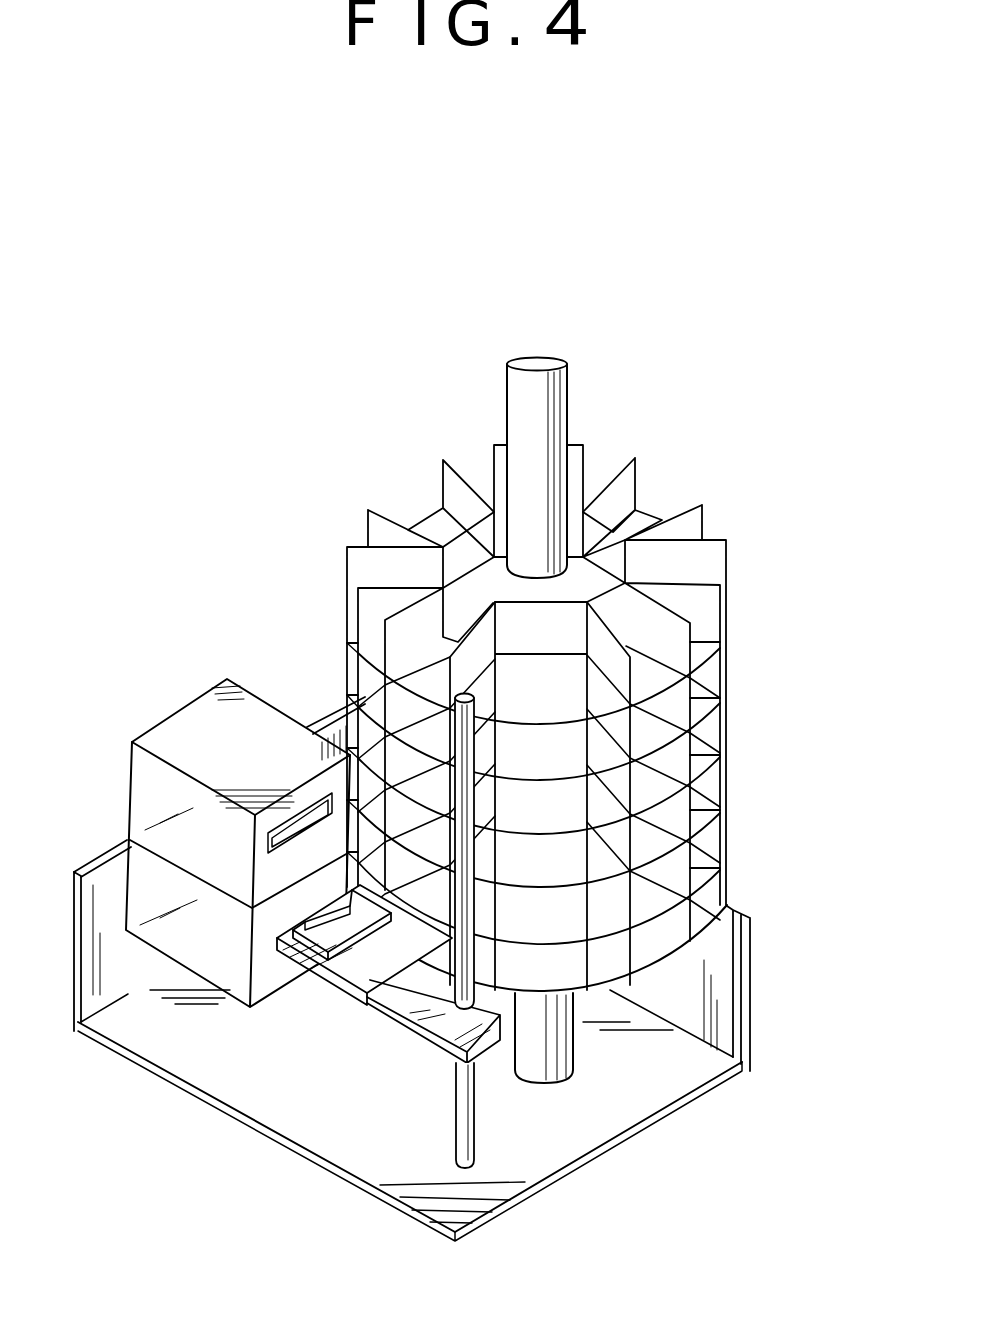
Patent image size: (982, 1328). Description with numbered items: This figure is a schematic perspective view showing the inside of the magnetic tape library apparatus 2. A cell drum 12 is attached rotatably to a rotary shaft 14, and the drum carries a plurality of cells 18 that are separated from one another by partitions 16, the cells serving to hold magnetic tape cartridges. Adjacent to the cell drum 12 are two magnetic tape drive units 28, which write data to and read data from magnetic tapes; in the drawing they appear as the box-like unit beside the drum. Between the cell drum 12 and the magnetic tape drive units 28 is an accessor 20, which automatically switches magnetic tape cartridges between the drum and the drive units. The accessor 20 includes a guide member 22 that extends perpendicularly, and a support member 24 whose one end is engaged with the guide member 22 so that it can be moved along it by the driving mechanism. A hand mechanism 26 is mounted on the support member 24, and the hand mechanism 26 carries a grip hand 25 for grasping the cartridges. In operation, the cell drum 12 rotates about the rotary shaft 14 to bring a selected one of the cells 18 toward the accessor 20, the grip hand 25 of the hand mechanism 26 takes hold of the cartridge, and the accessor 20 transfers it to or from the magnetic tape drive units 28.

The magnetic tape library apparatus 2 is at (337, 612).
The cell drum 12 is at (645, 497).
The rotary shaft 14 is at (567, 413).
The partitions 16 is at (703, 518).
The cells 18 is at (708, 795).
The accessor 20 is at (384, 1015).
The guide member 22 is at (470, 1133).
The support member 24 is at (437, 1030).
The grip hand 25 is at (300, 965).
The hand mechanism 26 is at (337, 985).
The magnetic tape drive units 28 is at (183, 730).